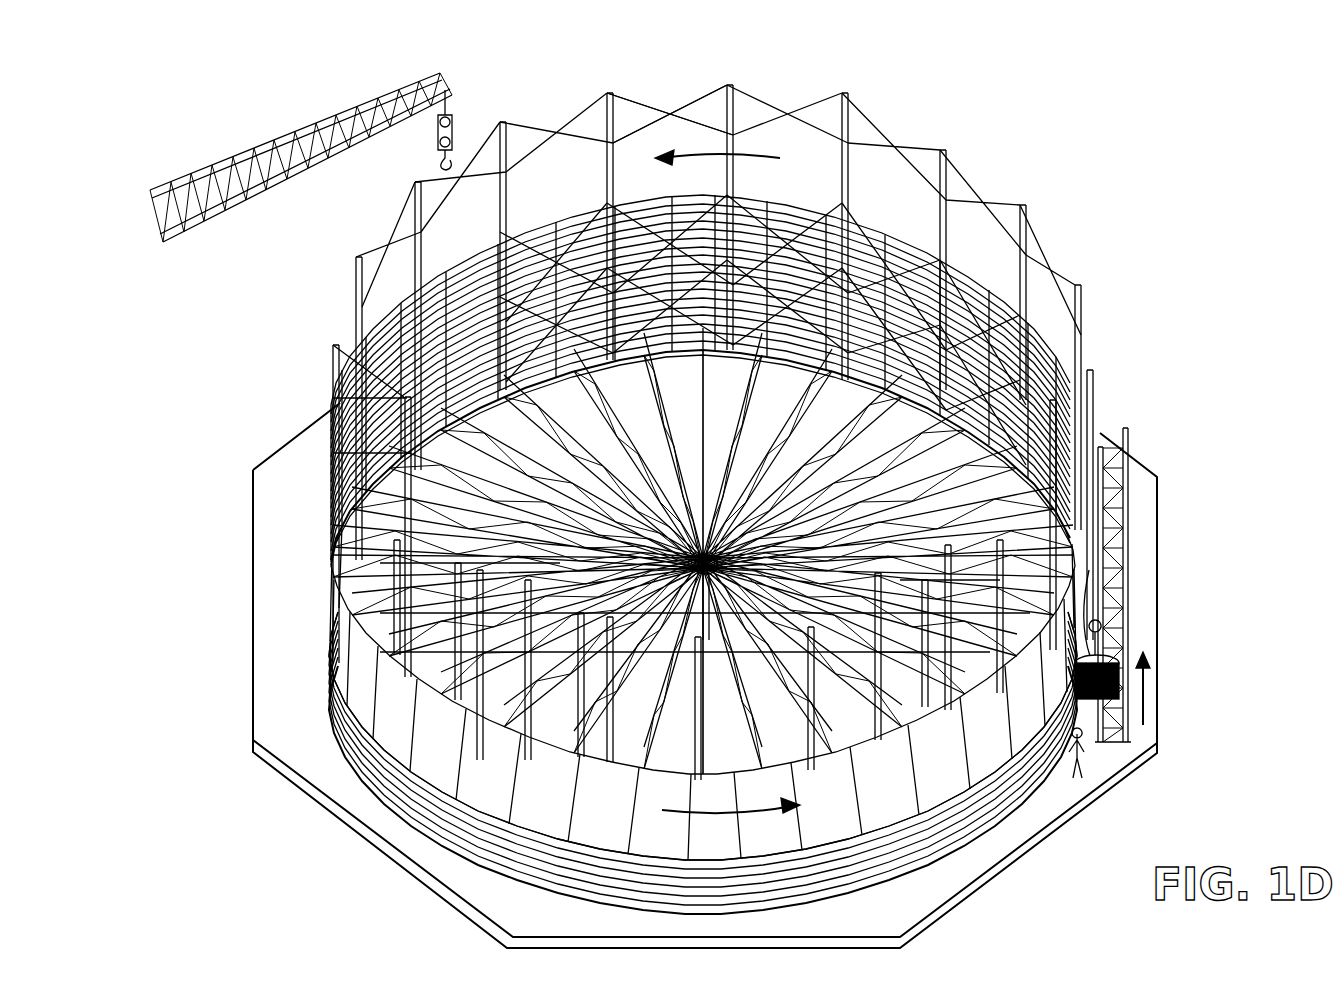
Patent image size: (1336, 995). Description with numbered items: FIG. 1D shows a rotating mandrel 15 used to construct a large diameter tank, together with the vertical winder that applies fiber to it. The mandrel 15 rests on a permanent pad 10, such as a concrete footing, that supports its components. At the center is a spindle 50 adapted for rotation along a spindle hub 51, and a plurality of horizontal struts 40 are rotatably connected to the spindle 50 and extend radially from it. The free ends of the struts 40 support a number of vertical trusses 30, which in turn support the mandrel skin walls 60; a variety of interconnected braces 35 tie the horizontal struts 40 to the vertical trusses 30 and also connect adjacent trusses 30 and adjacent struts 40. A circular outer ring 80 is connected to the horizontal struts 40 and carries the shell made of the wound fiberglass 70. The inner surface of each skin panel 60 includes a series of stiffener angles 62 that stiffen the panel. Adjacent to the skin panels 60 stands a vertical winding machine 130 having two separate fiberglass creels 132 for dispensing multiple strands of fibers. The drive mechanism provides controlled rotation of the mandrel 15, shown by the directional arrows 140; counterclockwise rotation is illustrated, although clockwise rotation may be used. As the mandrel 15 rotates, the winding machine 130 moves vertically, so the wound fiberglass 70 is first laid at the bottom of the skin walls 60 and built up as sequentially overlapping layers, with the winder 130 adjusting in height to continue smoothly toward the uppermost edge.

The permanent pad 10 is at (356, 803).
The mandrel 15 is at (968, 215).
The vertical trusses 30 is at (1090, 315).
The interconnected braces 35 is at (762, 100).
The horizontal struts 40 is at (818, 436).
The spindle 50 is at (706, 582).
The spindle hub 51 is at (698, 560).
The mandrel skin walls 60 is at (858, 215).
The stiffener angles 62 is at (874, 243).
The wound fiberglass 70 is at (988, 838).
The circular outer ring 80 is at (712, 352).
The vertical winding machine 130 is at (1130, 650).
The fiberglass creels 132 is at (1120, 612).
The directional arrows 140 is at (896, 486).